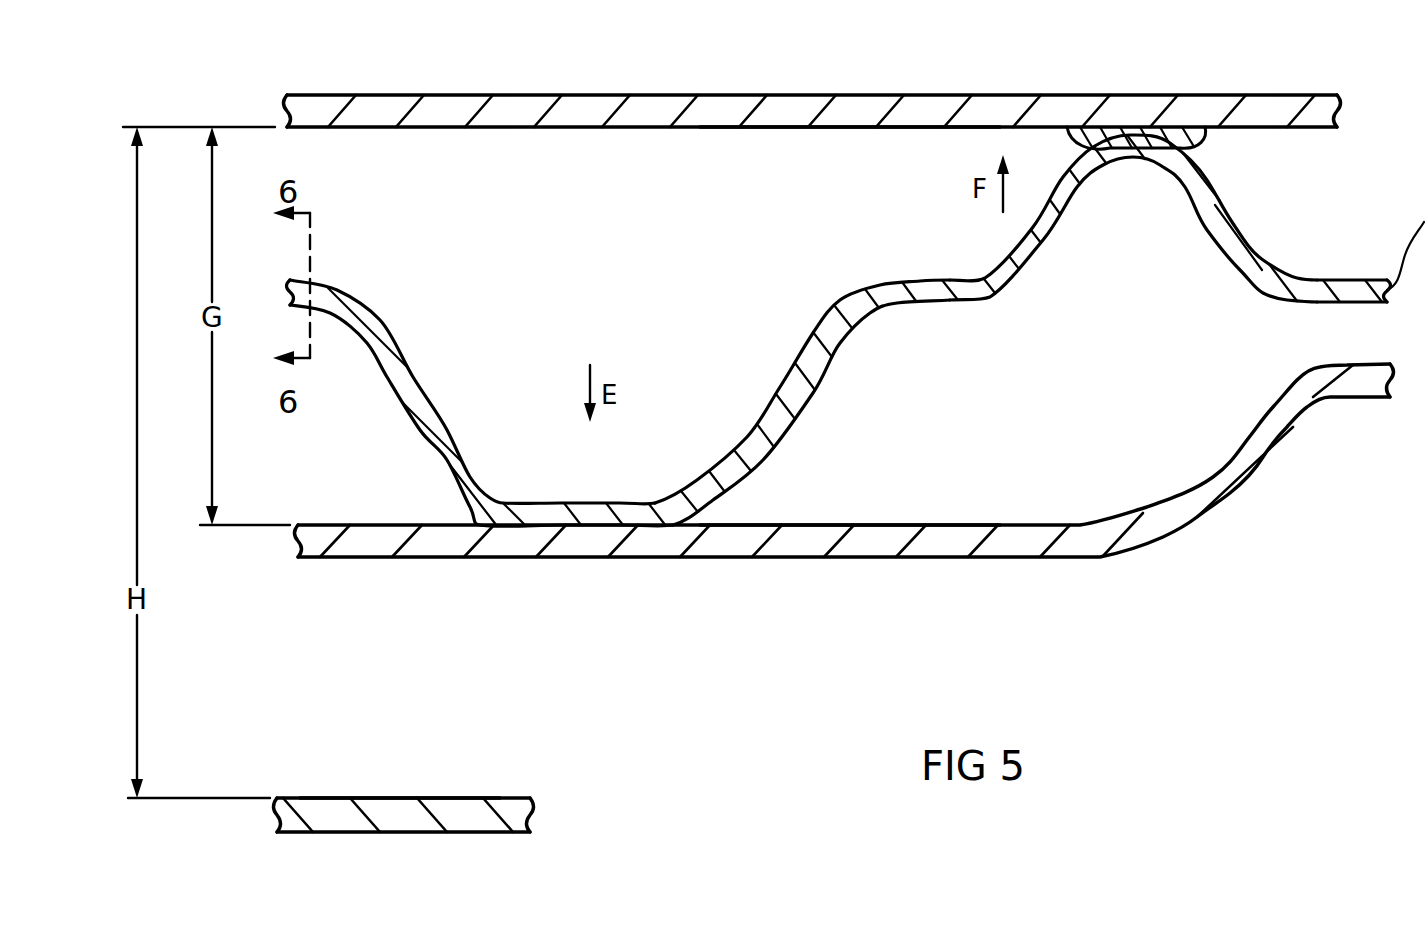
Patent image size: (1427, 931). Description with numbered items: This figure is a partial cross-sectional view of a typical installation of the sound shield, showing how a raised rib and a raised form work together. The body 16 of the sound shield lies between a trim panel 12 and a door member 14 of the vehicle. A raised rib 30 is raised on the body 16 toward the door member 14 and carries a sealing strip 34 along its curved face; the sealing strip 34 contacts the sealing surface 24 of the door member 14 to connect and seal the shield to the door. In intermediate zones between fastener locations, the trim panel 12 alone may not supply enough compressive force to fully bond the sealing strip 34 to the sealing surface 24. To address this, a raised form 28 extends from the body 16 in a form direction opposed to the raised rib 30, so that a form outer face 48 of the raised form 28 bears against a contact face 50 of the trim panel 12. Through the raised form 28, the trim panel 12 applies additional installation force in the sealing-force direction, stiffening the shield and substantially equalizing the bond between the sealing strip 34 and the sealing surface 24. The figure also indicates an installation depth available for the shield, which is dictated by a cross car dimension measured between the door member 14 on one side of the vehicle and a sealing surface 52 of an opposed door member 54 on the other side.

The trim panel 12 is at (1048, 558).
The door member 14 is at (633, 117).
The body 16 is at (1292, 292).
The sealing surface 24 is at (836, 136).
The raised form 28 is at (752, 445).
The raised rib 30 is at (1196, 198).
The sealing strip 34 is at (1196, 132).
The form outer face 48 is at (540, 537).
The contact face 50 is at (874, 515).
The sealing surface 52 is at (390, 788).
The opposed door member 54 is at (444, 798).